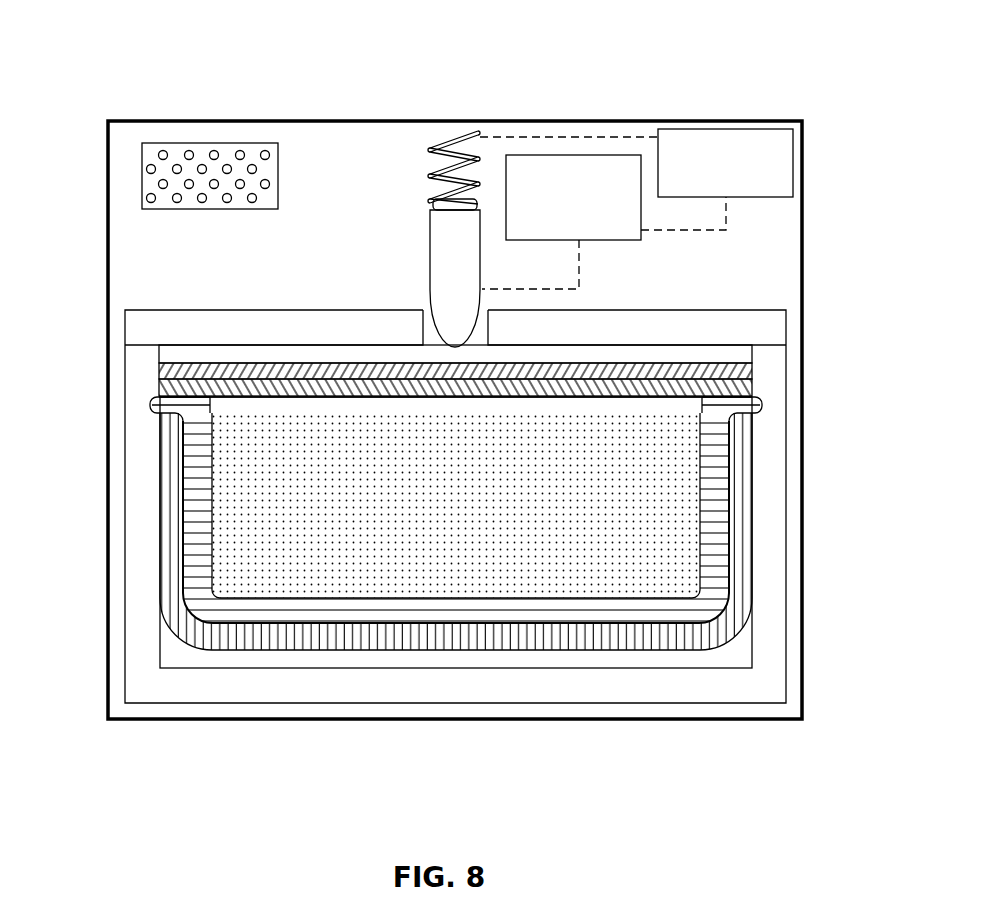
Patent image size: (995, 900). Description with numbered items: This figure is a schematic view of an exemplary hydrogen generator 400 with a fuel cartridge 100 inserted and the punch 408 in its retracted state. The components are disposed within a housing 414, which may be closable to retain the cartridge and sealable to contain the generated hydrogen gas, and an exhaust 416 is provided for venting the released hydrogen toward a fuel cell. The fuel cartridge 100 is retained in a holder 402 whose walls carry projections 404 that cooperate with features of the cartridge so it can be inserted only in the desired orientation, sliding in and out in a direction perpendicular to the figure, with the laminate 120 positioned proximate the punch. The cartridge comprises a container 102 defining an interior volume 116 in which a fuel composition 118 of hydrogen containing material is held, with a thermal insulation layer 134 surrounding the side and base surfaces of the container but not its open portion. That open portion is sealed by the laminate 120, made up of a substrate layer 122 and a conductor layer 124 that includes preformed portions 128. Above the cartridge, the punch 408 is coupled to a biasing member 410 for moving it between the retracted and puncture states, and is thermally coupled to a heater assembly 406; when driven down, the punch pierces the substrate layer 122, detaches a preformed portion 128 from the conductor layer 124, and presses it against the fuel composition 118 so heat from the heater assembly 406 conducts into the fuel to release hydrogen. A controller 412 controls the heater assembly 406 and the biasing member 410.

The hydrogen generator 400 is at (638, 49).
The housing 414 is at (390, 120).
The exhaust 416 is at (235, 142).
The biasing member 410 is at (447, 131).
The punch 408 is at (430, 235).
The heater assembly 406 is at (555, 236).
The controller 412 is at (708, 188).
The laminate 120 is at (815, 362).
The fuel cartridge 100 is at (176, 352).
The conductor layer 124 is at (256, 378).
The substrate layer 122 is at (333, 370).
The preformed portion 128 is at (427, 389).
The interior volume 116 is at (601, 402).
The surface features 404 is at (149, 397).
The holder 402 is at (135, 413).
The thermal insulation layer 134 is at (167, 559).
The container 102 is at (187, 469).
The fuel composition 118 is at (305, 586).